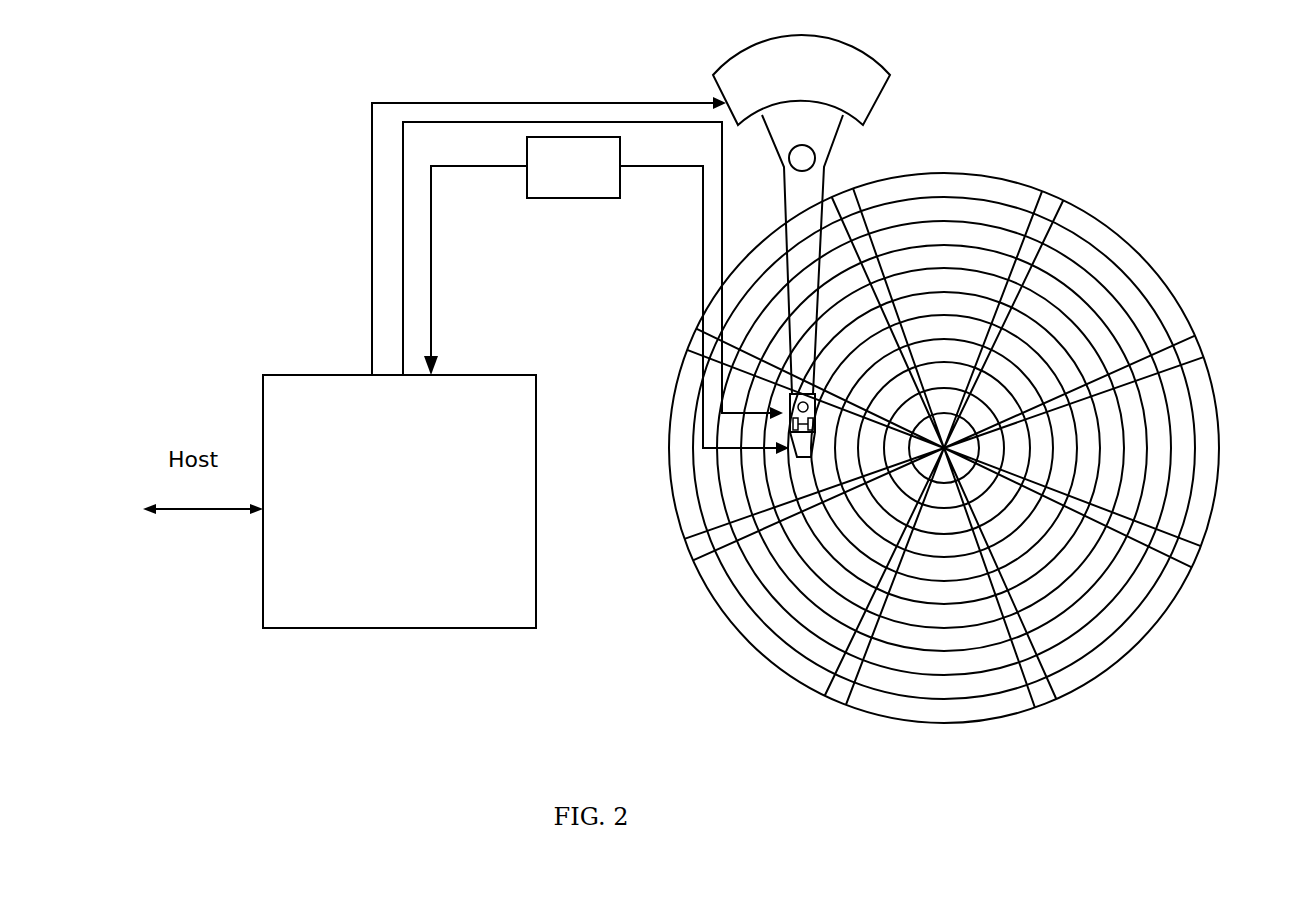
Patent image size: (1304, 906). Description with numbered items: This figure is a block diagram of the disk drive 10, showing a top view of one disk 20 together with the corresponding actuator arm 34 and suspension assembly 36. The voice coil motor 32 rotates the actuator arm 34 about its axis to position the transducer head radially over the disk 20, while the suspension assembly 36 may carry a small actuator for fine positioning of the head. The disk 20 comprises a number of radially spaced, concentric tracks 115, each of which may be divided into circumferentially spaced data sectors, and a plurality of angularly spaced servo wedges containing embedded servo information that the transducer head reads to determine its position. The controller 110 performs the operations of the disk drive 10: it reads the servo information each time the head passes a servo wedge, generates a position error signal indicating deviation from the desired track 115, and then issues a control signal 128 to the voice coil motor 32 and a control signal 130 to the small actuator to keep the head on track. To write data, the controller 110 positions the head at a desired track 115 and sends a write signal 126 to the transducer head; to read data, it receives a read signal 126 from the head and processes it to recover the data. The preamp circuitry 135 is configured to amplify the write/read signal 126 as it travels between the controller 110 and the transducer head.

The disk drive 10 is at (1249, 68).
The disk 20 is at (959, 439).
The voice coil motor 32 is at (885, 62).
The actuator arm 34 is at (782, 212).
The suspension assembly 36 is at (780, 460).
The controller 110 is at (508, 372).
The track 115 is at (944, 206).
The write/read signal 126 is at (432, 268).
The control signal 128 is at (368, 195).
The control signal 130 is at (722, 183).
The preamp circuitry 135 is at (563, 201).